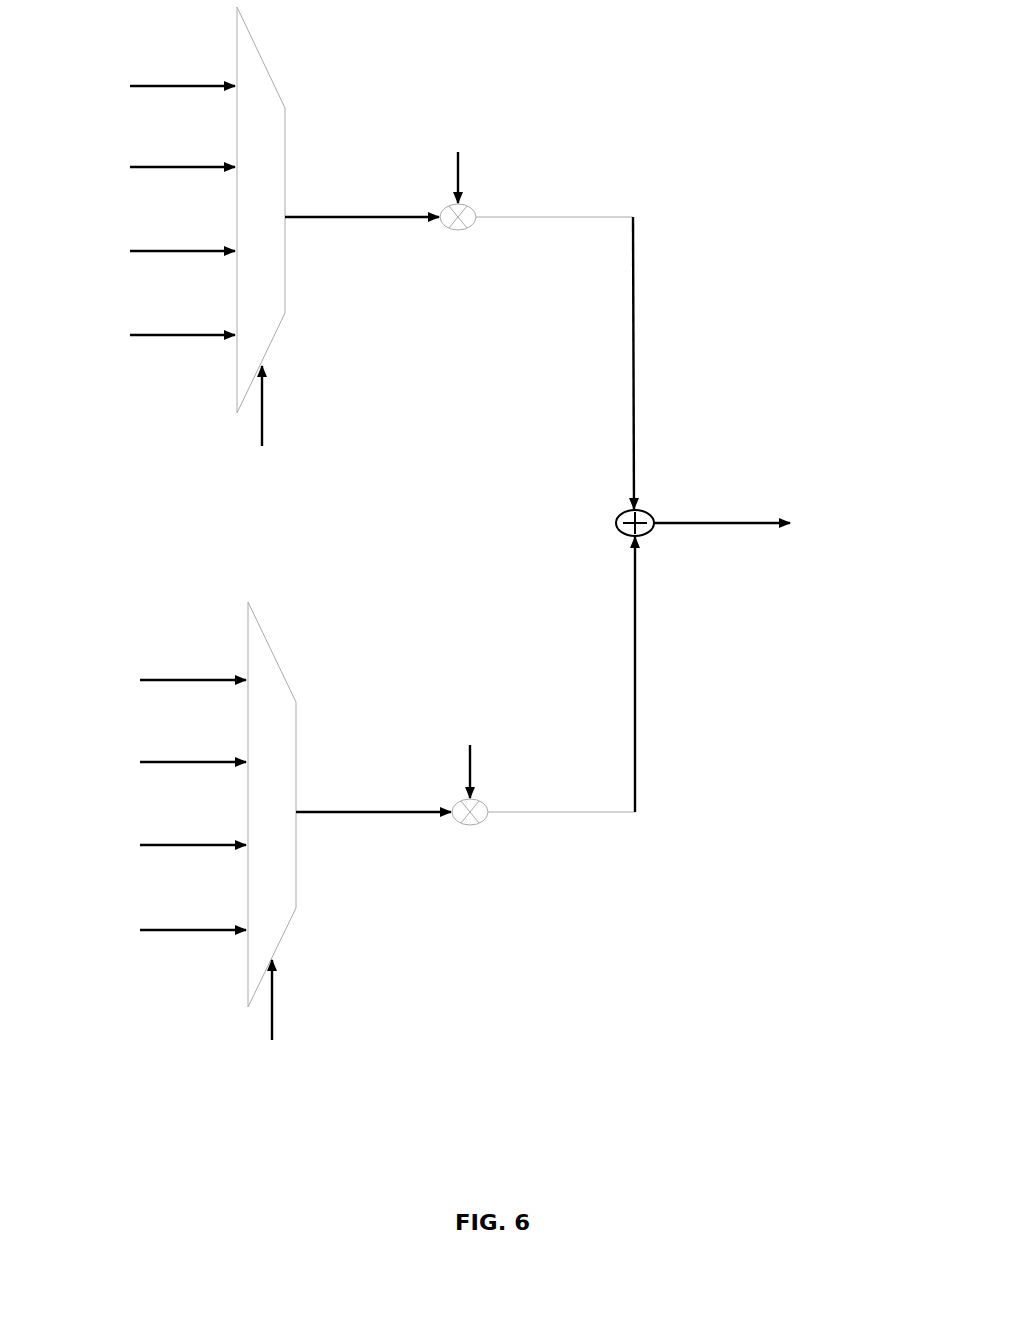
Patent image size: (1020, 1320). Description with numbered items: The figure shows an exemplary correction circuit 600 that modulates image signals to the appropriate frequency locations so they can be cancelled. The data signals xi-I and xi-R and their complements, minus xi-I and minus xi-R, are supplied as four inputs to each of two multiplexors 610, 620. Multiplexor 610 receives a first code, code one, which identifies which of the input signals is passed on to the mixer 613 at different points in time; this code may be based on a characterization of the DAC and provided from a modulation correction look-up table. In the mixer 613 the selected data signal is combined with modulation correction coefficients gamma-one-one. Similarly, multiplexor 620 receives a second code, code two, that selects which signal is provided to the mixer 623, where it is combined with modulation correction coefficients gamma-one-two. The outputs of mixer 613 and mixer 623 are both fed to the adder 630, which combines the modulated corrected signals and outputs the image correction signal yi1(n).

The combiner circuit 600 is at (628, 827).
The multiplexor 610 is at (202, 247).
The mixer 613 is at (459, 175).
The multiplexor 620 is at (215, 847).
The mixer 623 is at (465, 770).
The adder 630 is at (604, 514).